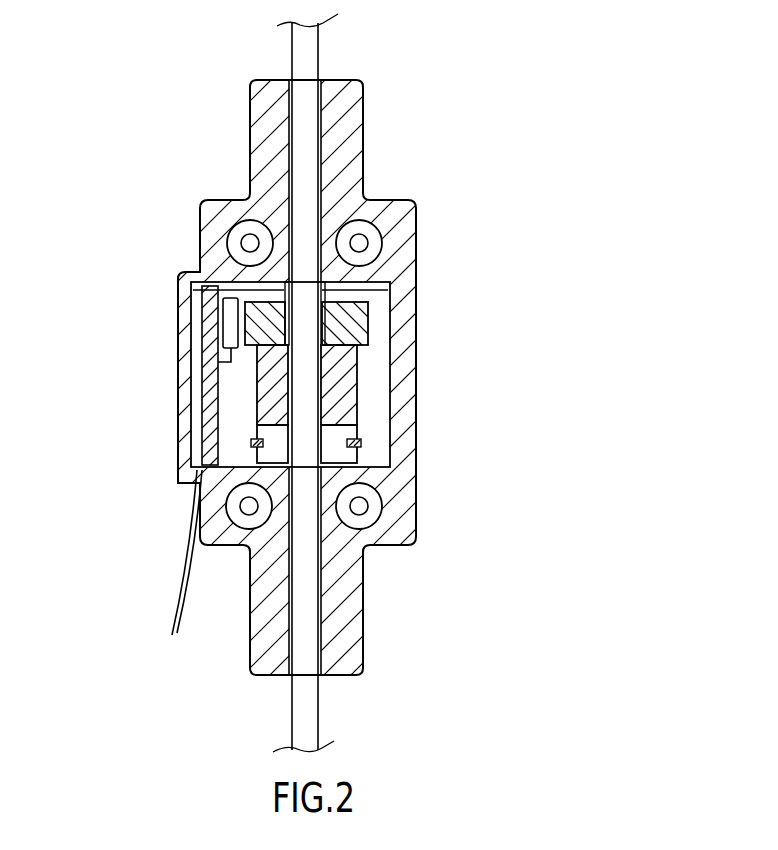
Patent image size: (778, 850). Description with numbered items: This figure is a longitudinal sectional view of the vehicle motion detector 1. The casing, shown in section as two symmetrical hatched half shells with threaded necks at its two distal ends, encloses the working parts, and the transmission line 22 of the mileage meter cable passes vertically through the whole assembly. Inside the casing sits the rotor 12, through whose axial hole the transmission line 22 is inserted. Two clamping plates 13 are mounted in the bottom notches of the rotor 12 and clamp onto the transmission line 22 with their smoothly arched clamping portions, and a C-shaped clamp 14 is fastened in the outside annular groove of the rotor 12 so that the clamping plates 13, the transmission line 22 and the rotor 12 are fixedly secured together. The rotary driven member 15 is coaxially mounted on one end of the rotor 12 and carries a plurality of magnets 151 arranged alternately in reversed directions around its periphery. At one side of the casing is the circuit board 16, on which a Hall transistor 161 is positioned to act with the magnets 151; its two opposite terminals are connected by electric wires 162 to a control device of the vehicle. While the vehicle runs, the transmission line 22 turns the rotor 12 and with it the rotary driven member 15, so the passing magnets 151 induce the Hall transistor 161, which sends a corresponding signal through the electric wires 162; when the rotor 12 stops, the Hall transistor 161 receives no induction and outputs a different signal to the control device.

The vehicle motion detector 1 is at (396, 162).
The transmission line 22 is at (308, 47).
The rotary driven member 15 is at (395, 283).
The magnets 151 is at (352, 322).
The rotor 12 is at (356, 380).
The clamping plates 13 is at (353, 431).
The C-shaped clamp 14 is at (360, 443).
The circuit board 16 is at (207, 412).
The Hall transistor 161 is at (232, 310).
The electric wires 162 is at (177, 577).